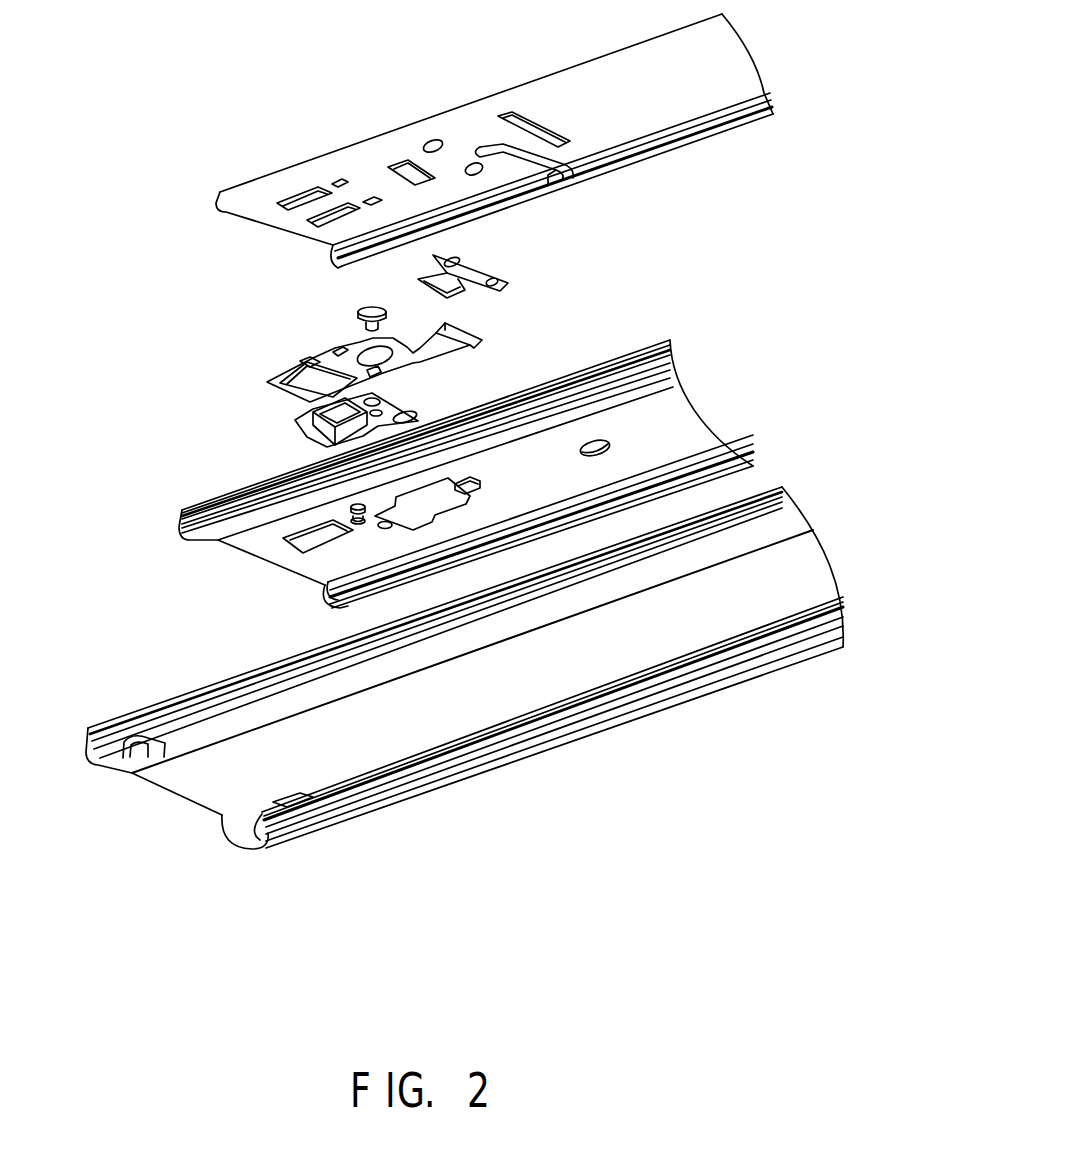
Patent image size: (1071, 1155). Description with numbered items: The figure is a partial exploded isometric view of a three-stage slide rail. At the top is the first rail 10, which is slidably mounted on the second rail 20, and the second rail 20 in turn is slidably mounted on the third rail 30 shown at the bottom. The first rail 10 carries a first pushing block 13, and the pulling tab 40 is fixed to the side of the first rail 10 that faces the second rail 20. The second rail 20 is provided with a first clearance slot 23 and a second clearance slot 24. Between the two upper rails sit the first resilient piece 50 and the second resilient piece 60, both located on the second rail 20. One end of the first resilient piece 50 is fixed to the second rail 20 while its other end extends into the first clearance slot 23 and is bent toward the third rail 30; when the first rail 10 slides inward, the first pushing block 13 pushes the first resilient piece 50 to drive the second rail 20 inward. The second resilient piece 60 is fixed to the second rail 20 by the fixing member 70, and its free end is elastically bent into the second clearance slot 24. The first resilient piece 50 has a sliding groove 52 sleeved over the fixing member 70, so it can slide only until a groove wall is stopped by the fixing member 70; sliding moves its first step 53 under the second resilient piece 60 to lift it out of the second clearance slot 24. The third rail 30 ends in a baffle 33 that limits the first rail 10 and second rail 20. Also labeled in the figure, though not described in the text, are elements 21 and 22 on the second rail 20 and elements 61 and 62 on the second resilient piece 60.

The first rail 10 is at (494, 141).
The first pushing block 13 is at (337, 180).
The second rail 20 is at (469, 490).
The hook edge 21 is at (315, 593).
The pin 22 is at (356, 517).
The first clearance slot 23 is at (447, 494).
The second clearance slot 24 is at (312, 538).
The third rail 30 is at (450, 668).
The baffle 33 is at (150, 747).
The pulling tab 40 is at (480, 266).
The first resilient piece 50 is at (342, 359).
The sliding groove 52 is at (372, 357).
The first step 53 is at (307, 360).
The second resilient piece 60 is at (368, 403).
The hole 61 is at (406, 414).
The hole 62 is at (380, 413).
The fixing member 70 is at (365, 312).